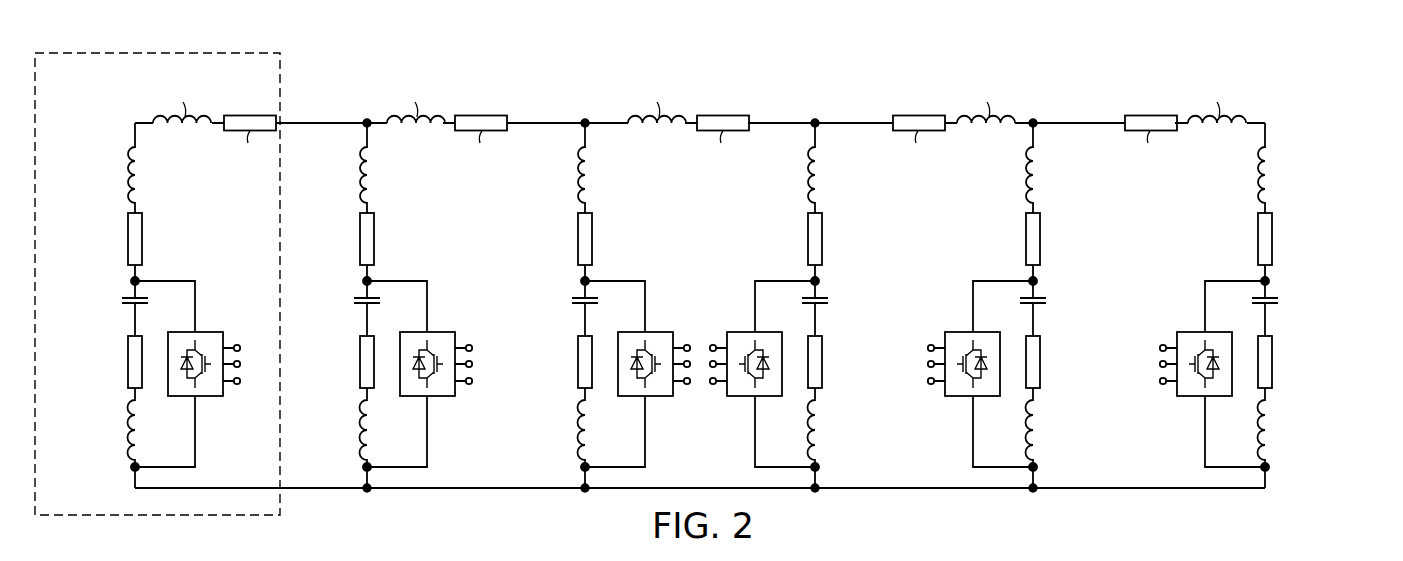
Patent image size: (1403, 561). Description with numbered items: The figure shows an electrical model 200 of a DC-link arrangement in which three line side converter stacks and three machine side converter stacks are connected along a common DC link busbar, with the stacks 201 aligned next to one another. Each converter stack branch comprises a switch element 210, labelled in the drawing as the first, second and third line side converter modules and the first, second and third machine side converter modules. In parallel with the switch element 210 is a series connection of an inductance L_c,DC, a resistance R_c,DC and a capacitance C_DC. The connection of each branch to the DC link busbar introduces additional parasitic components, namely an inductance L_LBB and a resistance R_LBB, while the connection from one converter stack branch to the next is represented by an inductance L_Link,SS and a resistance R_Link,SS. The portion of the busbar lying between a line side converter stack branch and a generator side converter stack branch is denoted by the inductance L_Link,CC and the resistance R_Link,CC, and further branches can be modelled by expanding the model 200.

The electrical model 200 is at (719, 279).
The MSC stack 201 is at (192, 279).
The switch element 210 is at (207, 397).